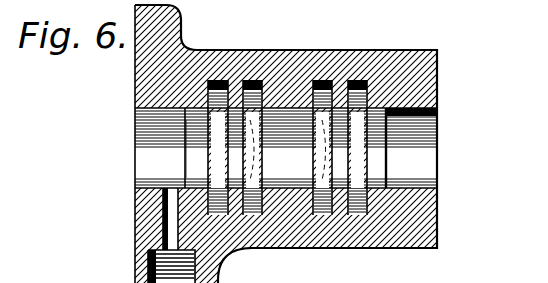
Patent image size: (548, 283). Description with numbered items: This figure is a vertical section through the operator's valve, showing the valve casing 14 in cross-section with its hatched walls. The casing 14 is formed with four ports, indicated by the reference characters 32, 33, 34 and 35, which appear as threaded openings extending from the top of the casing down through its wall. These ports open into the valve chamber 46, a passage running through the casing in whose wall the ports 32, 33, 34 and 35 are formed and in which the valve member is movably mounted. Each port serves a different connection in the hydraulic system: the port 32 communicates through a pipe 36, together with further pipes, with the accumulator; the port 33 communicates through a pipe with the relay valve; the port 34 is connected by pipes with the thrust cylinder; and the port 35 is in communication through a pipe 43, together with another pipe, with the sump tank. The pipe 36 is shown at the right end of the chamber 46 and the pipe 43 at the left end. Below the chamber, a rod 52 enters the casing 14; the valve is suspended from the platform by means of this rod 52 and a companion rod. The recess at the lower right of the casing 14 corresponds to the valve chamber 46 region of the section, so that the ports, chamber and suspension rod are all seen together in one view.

The valve casing 14 is at (375, 51).
The port 32 is at (357, 79).
The port 33 is at (323, 79).
The port 34 is at (250, 79).
The port 35 is at (221, 79).
The pipe 36 is at (388, 163).
The pipe 43 is at (197, 182).
The valve chamber 46 is at (248, 252).
The rod 52 is at (165, 218).